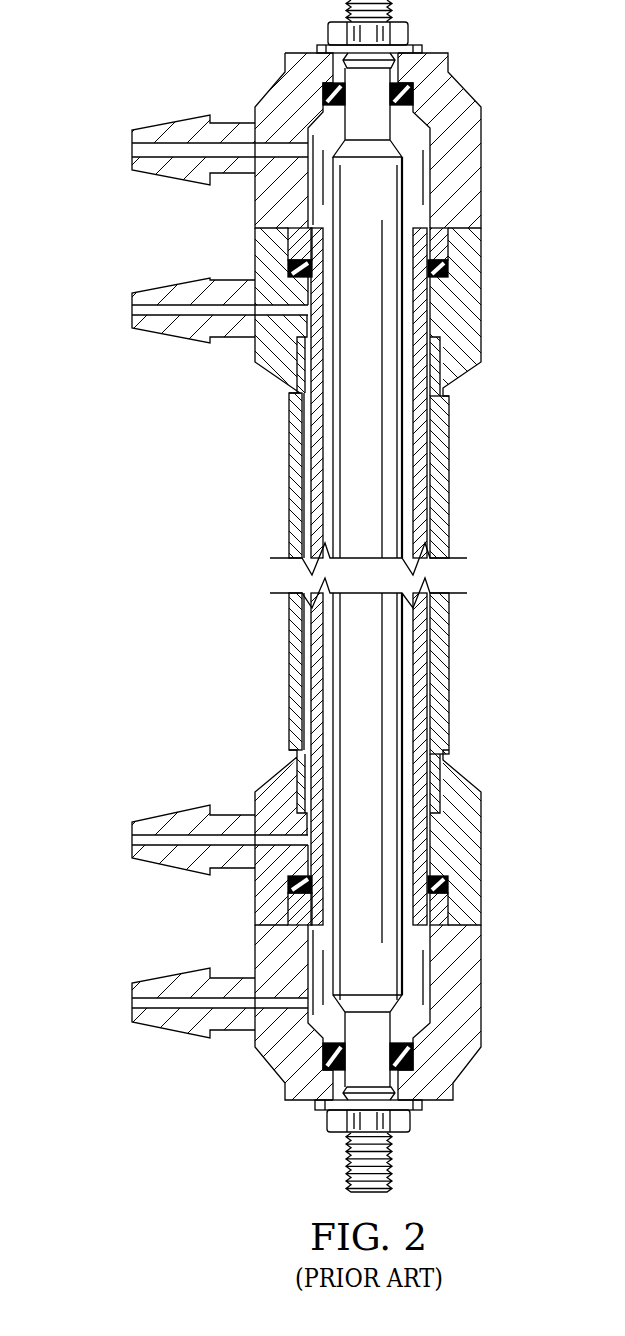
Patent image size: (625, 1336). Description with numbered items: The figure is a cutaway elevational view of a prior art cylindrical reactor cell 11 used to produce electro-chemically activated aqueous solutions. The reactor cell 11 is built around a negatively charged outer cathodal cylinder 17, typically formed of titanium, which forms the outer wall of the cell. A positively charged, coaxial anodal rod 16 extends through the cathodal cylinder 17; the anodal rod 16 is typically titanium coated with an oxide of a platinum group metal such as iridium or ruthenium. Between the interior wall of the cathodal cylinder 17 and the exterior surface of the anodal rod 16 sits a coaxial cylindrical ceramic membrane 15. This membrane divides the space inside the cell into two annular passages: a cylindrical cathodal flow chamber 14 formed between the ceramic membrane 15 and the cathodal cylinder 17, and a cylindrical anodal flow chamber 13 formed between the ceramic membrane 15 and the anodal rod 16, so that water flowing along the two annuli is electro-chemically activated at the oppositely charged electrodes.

The reactor cell 11 is at (273, 596).
The anodal flow chamber 13 is at (410, 467).
The cathodal flow chamber 14 is at (310, 462).
The ceramic membrane 15 is at (418, 632).
The anodal rod 16 is at (395, 508).
The cathodal cylinder 17 is at (298, 690).